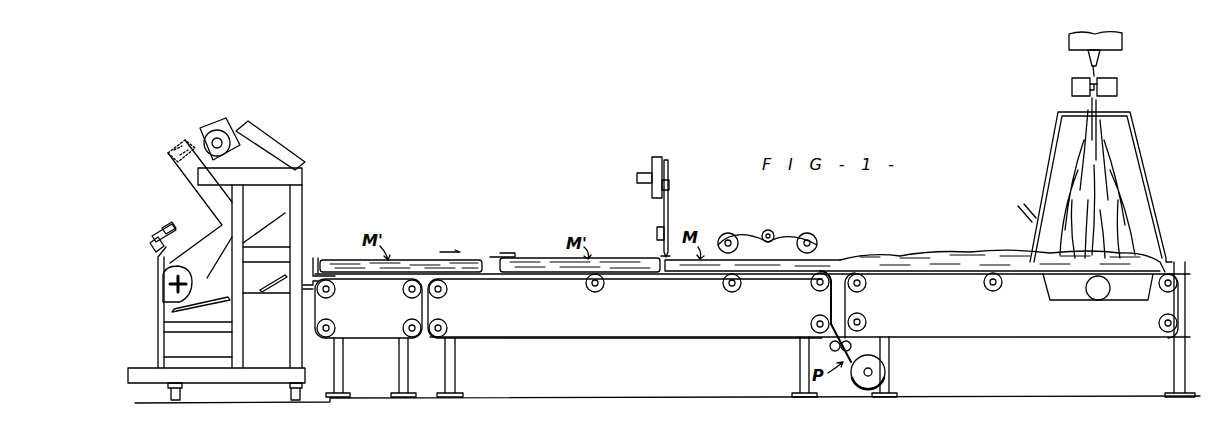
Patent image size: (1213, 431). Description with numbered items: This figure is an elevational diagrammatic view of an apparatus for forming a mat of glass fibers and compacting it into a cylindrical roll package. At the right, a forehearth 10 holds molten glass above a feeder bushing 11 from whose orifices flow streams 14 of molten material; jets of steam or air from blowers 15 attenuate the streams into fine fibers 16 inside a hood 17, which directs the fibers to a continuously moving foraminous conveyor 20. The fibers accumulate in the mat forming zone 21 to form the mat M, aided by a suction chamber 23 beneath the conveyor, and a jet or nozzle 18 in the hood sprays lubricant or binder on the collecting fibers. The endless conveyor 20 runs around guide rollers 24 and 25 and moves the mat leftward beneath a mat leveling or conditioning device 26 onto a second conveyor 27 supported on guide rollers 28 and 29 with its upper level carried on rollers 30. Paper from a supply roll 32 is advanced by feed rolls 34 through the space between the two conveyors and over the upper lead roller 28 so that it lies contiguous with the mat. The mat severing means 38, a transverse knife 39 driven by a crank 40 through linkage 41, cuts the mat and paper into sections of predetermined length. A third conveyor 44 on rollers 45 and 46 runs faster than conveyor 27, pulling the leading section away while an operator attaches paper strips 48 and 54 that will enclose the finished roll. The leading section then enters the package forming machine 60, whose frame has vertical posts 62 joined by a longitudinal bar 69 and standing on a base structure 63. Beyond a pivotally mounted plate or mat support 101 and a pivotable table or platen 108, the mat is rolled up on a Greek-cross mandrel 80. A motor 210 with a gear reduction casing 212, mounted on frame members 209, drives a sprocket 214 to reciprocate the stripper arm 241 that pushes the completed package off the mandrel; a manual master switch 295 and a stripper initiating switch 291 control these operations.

The forehearth 10 is at (1123, 38).
The feeder bushing 11 is at (1102, 66).
The streams of molten material 14 is at (1092, 70).
The blowers 15 is at (1064, 95).
The fine fibers 16 is at (1135, 212).
The hood 17 is at (1148, 155).
The jet or nozzle 18 is at (1018, 212).
The foraminous conveyor 20 is at (960, 280).
The mat forming zone 21 is at (1141, 252).
The suction chamber 23 is at (1078, 300).
The guide roller 24 is at (1168, 295).
The guide roller 25 is at (860, 292).
The mat leveling or conditioning device 26 is at (801, 227).
The second conveyor 27 is at (700, 274).
The upper lead guide roller 28 is at (812, 320).
The guide roller 29 is at (458, 318).
The support rollers 30 is at (592, 292).
The supply roll 32 is at (886, 373).
The feed rolls 34 is at (851, 345).
The mat severing means 38 is at (653, 226).
The shearing bar or knife 39 is at (660, 252).
The crank 40 is at (664, 170).
The linkage 41 is at (668, 207).
The third conveyor 44 is at (346, 283).
The roller 45 is at (336, 322).
The roller 46 is at (412, 319).
The strip of paper 48 is at (498, 257).
The strip of paper 54 is at (528, 258).
The package forming machine 60 is at (311, 176).
The vertical posts 62 is at (243, 218).
The base structure 63 is at (222, 378).
The longitudinally extending bar 69 is at (300, 166).
The mandrel 80 is at (165, 290).
The plate or mat support 101 is at (286, 290).
The table or platen 108 is at (201, 298).
The frame members 209 is at (250, 132).
The electrically energizable motor 210 is at (217, 128).
The casing 212 is at (200, 133).
The sprocket 214 is at (172, 165).
The forwardly extending arm or member 241 is at (195, 247).
The stripper initiating switch 291 is at (152, 240).
The manual switch 295 is at (164, 226).